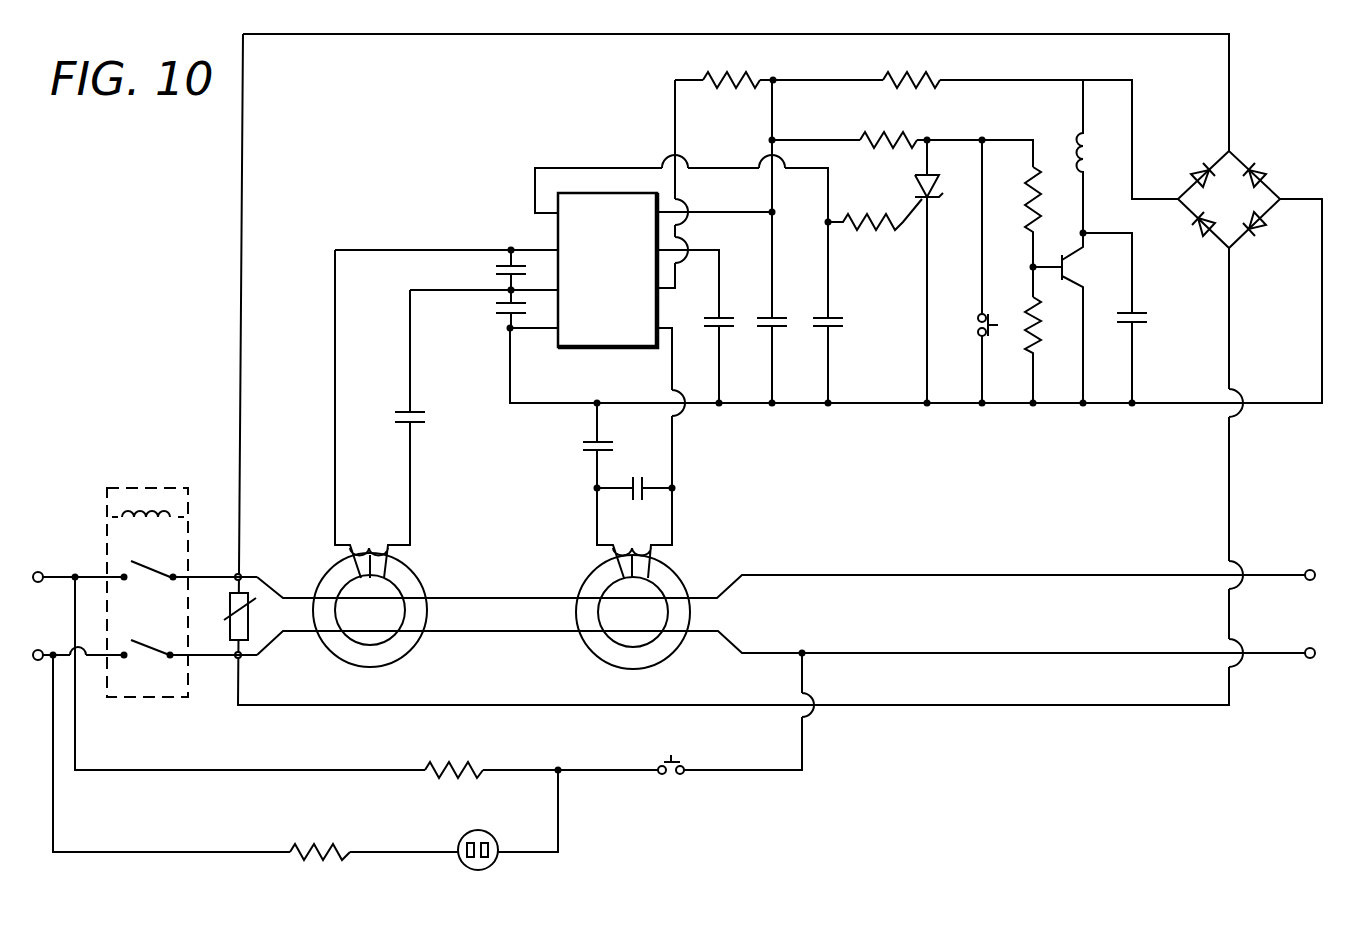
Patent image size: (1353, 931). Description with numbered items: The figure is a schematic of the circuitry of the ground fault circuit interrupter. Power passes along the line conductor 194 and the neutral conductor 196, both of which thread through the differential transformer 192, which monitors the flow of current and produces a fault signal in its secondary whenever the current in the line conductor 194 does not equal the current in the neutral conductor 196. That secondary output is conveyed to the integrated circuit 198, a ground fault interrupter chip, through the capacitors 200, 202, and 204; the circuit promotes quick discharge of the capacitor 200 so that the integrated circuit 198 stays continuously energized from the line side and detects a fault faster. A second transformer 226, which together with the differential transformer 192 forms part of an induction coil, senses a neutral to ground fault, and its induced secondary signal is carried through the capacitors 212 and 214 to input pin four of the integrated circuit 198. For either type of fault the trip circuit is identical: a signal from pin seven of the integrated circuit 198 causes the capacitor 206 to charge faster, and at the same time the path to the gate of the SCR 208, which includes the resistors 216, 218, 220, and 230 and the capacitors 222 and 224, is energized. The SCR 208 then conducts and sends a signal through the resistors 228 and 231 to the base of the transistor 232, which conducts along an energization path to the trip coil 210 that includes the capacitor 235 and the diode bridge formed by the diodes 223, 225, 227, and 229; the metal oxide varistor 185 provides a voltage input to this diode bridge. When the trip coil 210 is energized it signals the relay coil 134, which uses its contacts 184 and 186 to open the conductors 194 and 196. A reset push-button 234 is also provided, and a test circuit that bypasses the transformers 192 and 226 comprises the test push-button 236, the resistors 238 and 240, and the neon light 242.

The relay coil 134 is at (154, 488).
The contact 184 is at (160, 568).
The metal oxide varistor 185 is at (250, 597).
The contact 186 is at (150, 648).
The differential transformer 192 is at (402, 575).
The line conductor 194 is at (547, 589).
The neutral conductor 196 is at (489, 640).
The integrated circuit 198 is at (612, 193).
The capacitor 200 is at (425, 418).
The capacitor 202 is at (496, 269).
The capacitor 204 is at (496, 311).
The capacitor 206 is at (739, 302).
The SCR 208 is at (912, 187).
The trip coil 210 is at (1076, 134).
The capacitor 212 is at (638, 476).
The capacitor 214 is at (583, 444).
The resistor 216 is at (712, 78).
The resistor 218 is at (913, 138).
The resistor 220 is at (898, 232).
The capacitor 222 is at (792, 302).
The diode 223 is at (1282, 160).
The capacitor 224 is at (848, 311).
The diode 225 is at (1204, 166).
The transformer 226 is at (671, 570).
The diode 227 is at (1263, 248).
The resistor 228 is at (1023, 200).
The diode 229 is at (1205, 254).
The resistor 230 is at (888, 75).
The resistor 231 is at (1026, 304).
The transistor 232 is at (1074, 268).
The reset push-button 234 is at (976, 333).
The capacitor 235 is at (1147, 318).
The test push-button 236 is at (670, 757).
The resistor 238 is at (480, 767).
The resistor 240 is at (346, 848).
The neon light 242 is at (512, 826).